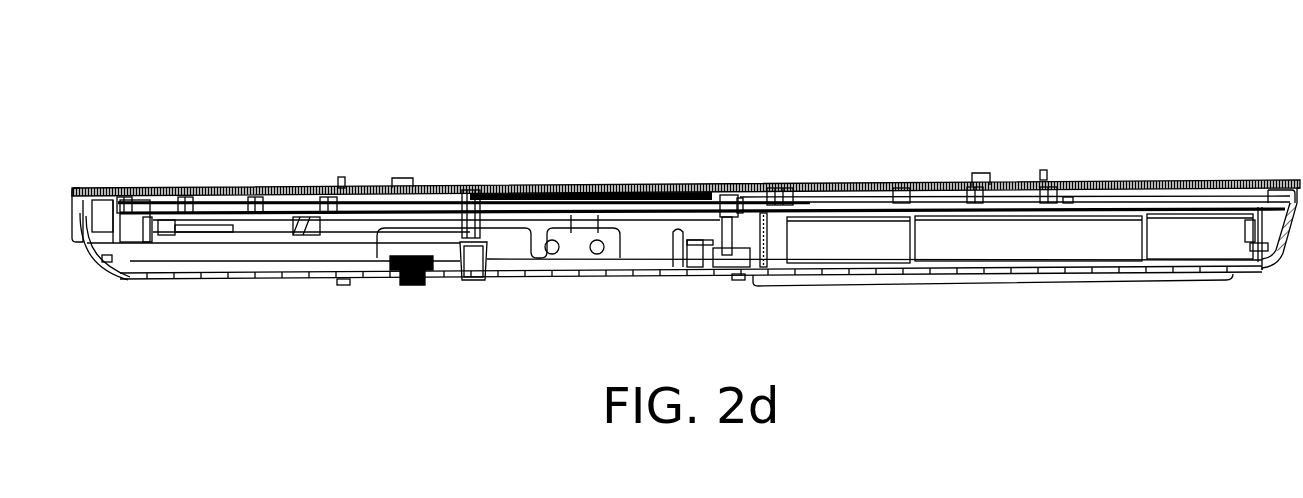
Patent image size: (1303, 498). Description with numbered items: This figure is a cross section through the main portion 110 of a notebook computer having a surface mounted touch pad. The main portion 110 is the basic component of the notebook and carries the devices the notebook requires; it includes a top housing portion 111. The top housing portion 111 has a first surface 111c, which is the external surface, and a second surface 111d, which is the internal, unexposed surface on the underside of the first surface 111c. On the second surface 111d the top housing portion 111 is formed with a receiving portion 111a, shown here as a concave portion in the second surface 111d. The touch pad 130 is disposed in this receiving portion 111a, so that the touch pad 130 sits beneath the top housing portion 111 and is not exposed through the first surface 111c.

The main portion 110 is at (70, 67).
The top housing portion 111 is at (922, 182).
The receiving portion 111a is at (707, 183).
The first surface 111c is at (230, 200).
The second surface 111d is at (230, 205).
The touch pad 130 is at (628, 183).